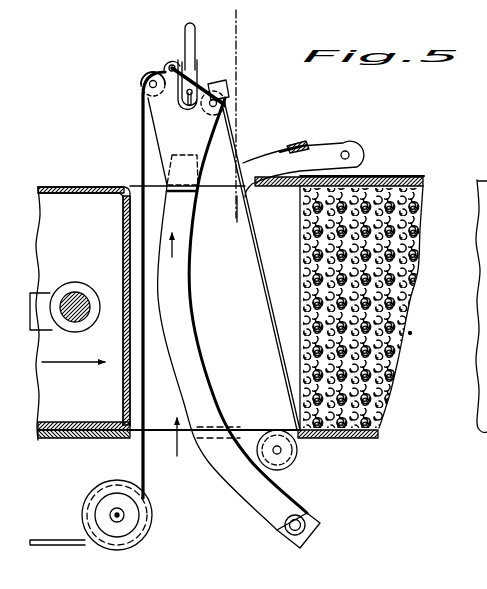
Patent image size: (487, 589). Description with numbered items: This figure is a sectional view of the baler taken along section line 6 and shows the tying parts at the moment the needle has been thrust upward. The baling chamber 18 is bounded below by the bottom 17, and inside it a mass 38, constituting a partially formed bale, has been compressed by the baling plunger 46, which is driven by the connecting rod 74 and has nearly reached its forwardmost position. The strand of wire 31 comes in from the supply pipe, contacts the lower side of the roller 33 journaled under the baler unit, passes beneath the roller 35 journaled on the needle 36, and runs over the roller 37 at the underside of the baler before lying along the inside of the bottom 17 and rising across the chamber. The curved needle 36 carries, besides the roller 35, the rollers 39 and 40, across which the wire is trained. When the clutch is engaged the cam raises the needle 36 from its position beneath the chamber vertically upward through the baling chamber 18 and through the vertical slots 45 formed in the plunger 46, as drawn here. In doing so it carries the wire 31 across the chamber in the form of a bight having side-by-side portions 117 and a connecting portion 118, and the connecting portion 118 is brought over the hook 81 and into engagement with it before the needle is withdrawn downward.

The section line 6- 6 is at (238, 33).
The bottom 17 is at (76, 424).
The baling chamber 18 is at (380, 403).
The strand of wire 31 is at (60, 545).
The roller 33 is at (130, 537).
The roller 35 is at (158, 66).
The needle 36 is at (183, 287).
The roller 37 is at (294, 467).
The mass 38 is at (380, 315).
The roller 39 is at (142, 80).
The roller 40 is at (226, 102).
The vertical slots 45 is at (128, 430).
The baling plunger 46 is at (70, 187).
The connecting rod 74 is at (42, 285).
The hook 81 is at (185, 33).
The side-by-side portions 117 is at (270, 328).
The connecting portion 118 is at (202, 83).